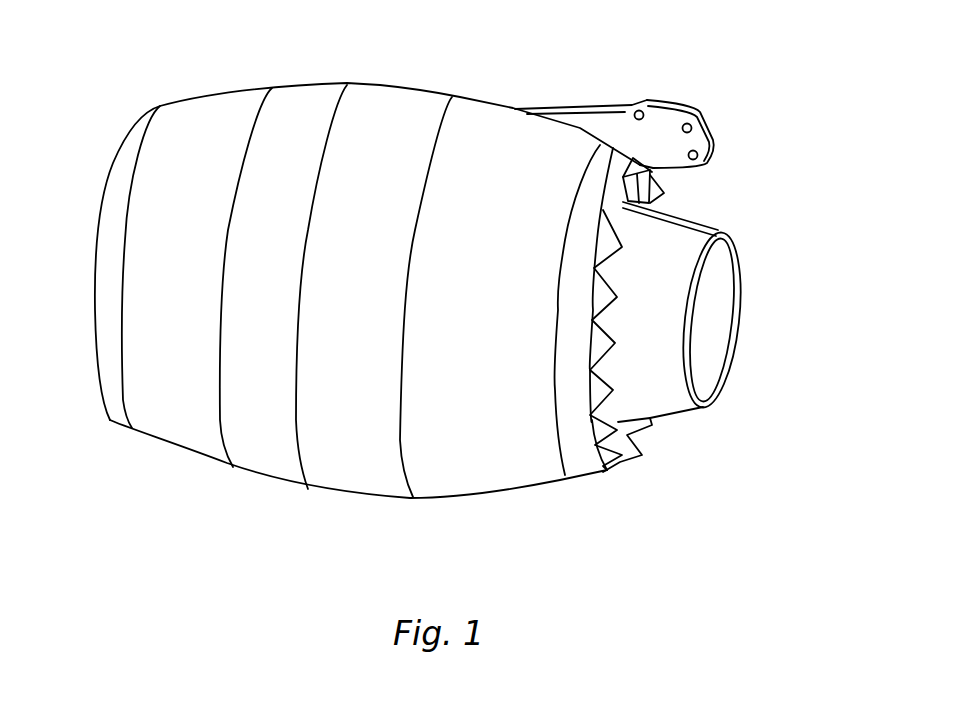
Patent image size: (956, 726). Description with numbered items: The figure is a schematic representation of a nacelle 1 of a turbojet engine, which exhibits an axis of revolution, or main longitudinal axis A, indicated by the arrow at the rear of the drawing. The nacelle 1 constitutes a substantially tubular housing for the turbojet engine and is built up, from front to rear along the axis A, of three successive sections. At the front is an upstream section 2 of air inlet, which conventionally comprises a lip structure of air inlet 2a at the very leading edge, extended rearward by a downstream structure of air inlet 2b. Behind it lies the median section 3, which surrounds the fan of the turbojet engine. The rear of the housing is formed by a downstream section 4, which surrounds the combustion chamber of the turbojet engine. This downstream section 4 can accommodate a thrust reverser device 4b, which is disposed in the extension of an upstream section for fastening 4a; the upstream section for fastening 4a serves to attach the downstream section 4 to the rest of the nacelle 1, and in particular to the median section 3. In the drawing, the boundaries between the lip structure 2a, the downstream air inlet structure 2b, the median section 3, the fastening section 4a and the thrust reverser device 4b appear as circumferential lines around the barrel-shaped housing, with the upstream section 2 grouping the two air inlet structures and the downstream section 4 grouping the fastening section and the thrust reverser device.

The nacelle 1 is at (453, 314).
The upstream section of air inlet 2 is at (165, 316).
The lip structure of air inlet 2a is at (112, 400).
The downstream structure of air inlet 2b is at (209, 302).
The median section 3 is at (273, 452).
The downstream section 4 is at (474, 355).
The upstream section for fastening 4a is at (375, 477).
The thrust reverser device 4b is at (517, 359).
The main longitudinal axis A is at (708, 317).